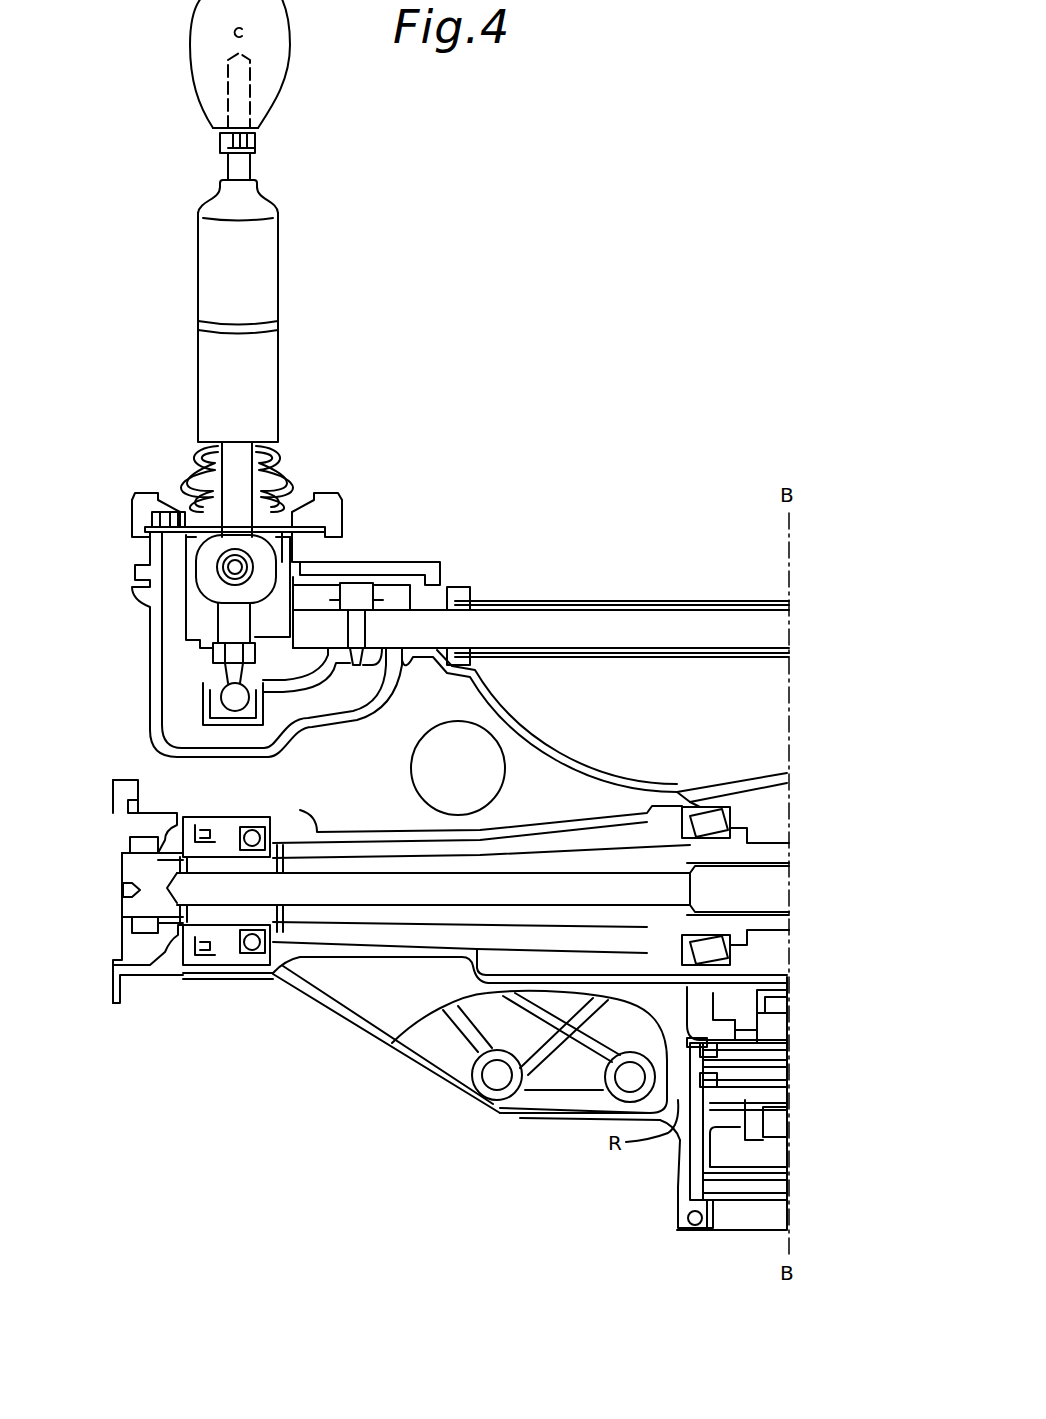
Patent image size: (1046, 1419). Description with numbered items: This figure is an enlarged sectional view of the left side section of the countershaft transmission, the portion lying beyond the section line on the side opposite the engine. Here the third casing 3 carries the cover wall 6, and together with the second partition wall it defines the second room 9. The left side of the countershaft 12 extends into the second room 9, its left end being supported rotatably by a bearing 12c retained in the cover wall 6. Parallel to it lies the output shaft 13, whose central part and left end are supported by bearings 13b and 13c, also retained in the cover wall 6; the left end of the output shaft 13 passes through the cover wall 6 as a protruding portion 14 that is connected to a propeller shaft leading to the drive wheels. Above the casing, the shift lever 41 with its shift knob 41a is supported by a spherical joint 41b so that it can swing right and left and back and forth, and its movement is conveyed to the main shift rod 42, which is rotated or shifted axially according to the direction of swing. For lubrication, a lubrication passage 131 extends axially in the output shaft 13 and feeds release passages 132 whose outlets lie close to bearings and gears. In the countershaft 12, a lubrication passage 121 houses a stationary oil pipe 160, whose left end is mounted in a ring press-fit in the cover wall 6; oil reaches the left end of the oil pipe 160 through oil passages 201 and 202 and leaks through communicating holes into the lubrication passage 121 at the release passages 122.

The lamp bulb 41a is at (268, 84).
The shift lever 41 is at (267, 283).
The spherical joint 41b is at (263, 567).
The main shift rod 42 is at (605, 628).
The third casing 3 is at (767, 775).
The output shaft 13 is at (525, 858).
The bearing 13b is at (712, 820).
The bearing 13c is at (252, 838).
The second room 9 is at (770, 813).
The release passages 132 is at (283, 860).
The lubrication passage 131 is at (770, 893).
The protruding portion 14 is at (127, 968).
The cover wall 6 is at (697, 1017).
The release passages 122 is at (790, 1035).
The lubrication passage 121 is at (790, 1055).
The oil pipe 160 is at (785, 1082).
The countershaft 12 is at (777, 1093).
The bearing 12c is at (775, 1123).
The oil passage 202 is at (695, 1190).
The oil passage 201 is at (780, 1190).